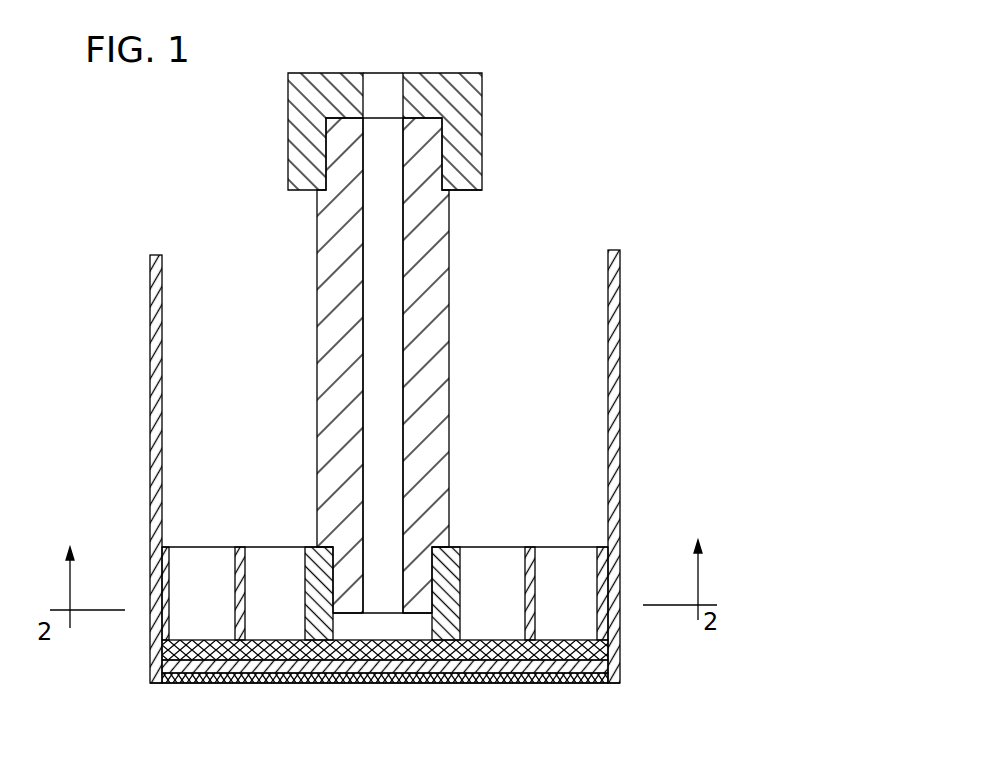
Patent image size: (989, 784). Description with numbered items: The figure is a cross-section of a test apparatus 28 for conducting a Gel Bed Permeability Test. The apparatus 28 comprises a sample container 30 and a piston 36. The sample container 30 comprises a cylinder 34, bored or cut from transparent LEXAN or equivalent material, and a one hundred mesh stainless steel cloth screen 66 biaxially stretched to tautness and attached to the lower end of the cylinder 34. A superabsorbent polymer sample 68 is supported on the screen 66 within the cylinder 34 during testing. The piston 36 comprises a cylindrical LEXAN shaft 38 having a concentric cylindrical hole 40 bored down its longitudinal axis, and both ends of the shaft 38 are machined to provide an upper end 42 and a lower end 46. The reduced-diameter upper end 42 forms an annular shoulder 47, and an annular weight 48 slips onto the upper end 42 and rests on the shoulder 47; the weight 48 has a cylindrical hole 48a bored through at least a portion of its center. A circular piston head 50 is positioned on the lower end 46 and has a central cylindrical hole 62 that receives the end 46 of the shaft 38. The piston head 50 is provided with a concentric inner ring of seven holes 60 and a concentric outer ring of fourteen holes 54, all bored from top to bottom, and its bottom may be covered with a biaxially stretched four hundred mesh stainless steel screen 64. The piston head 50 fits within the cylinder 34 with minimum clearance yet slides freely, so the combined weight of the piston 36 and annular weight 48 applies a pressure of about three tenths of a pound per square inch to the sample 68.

The test apparatus 28 is at (570, 192).
The sample container 30 is at (150, 400).
The cylinder 34 is at (620, 452).
The piston 36 is at (487, 442).
The shaft 38 is at (317, 410).
The cylindrical hole 40 is at (403, 225).
The upper end 42 is at (345, 172).
The lower end 46 is at (415, 613).
The annular shoulder 47 is at (455, 180).
The annular weight 48 is at (288, 125).
The cylindrical hole 48a is at (403, 97).
The piston head 50 is at (608, 548).
The outer ring holes 54 is at (165, 618).
The inner ring holes 60 is at (247, 578).
The cylindrical hole 62 is at (338, 655).
The stainless steel screen 64 is at (517, 681).
The stainless steel cloth screen 66 is at (363, 680).
The superabsorbent polymer sample 68 is at (255, 667).